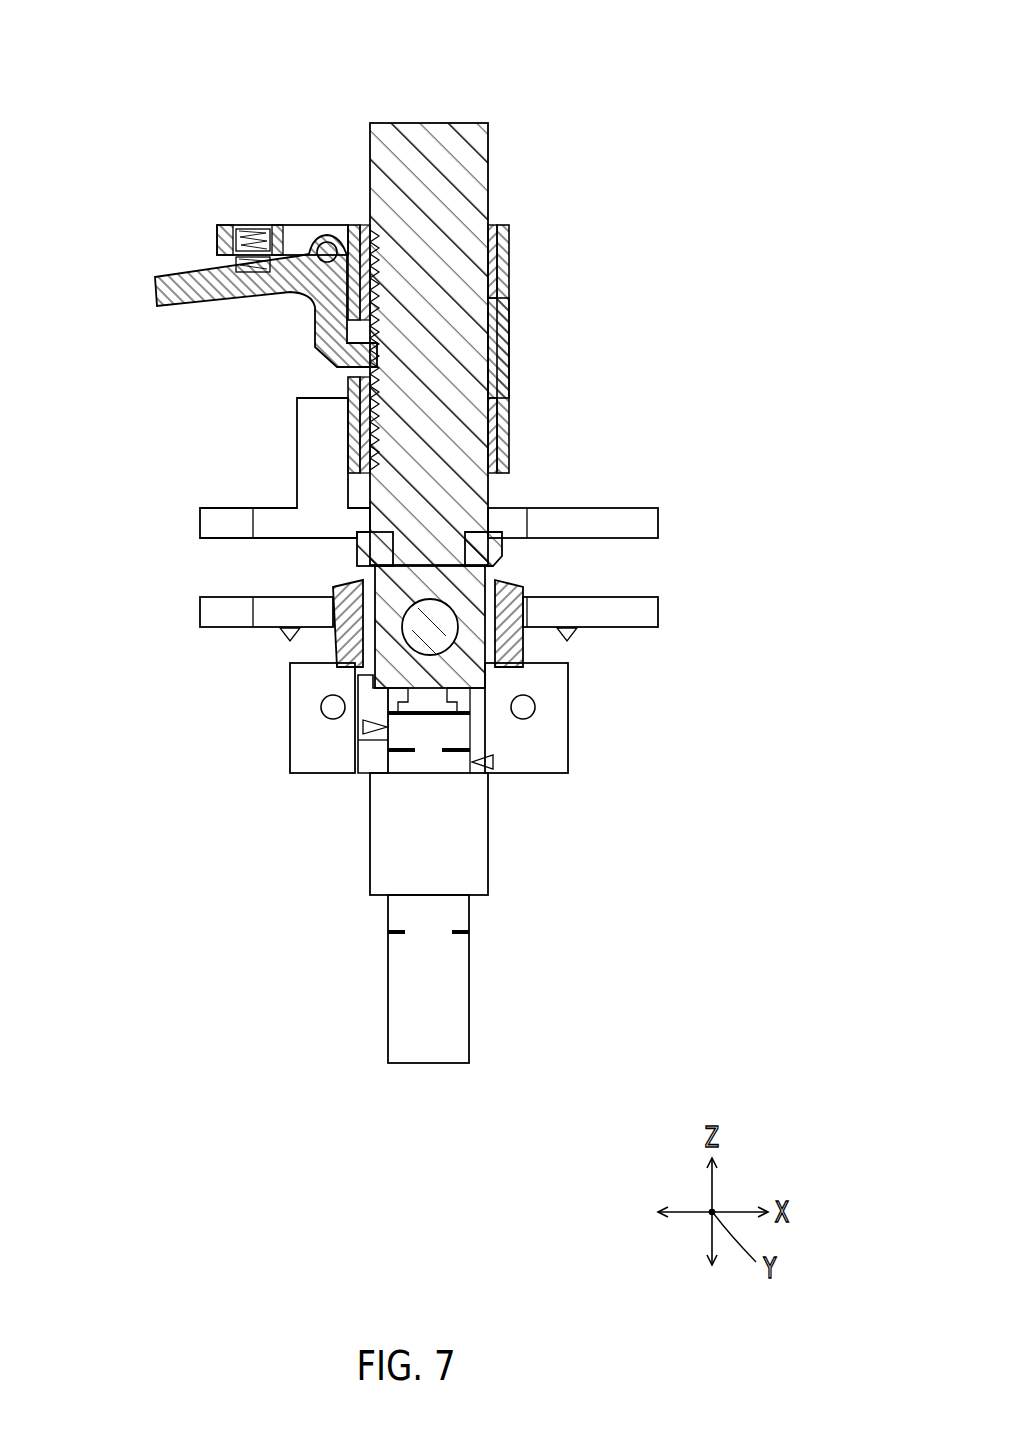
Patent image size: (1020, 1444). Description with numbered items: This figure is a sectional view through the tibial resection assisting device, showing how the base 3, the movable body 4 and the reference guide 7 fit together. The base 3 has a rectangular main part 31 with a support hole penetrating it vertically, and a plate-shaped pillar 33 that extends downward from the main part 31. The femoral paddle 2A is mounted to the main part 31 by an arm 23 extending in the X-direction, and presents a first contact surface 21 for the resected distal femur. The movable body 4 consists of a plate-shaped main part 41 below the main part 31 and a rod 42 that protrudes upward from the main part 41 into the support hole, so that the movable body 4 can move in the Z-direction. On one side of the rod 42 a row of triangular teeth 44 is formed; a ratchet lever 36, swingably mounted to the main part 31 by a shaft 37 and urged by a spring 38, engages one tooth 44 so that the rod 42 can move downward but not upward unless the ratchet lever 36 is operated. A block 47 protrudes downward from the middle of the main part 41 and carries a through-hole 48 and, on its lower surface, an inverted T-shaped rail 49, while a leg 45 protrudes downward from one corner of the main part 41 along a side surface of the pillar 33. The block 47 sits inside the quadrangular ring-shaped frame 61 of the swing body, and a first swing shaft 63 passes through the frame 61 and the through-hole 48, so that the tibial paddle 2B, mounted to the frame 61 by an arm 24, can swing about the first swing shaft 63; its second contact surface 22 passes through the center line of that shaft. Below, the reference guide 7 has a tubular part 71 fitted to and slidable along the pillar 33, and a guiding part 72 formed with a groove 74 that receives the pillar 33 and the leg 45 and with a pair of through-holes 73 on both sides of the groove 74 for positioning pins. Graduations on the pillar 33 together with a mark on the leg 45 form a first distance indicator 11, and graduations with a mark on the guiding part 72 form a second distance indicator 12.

The movable body 4 is at (355, 386).
The rod 42 is at (428, 172).
The teeth 44 is at (352, 224).
The base 3 is at (558, 344).
The main part 31 is at (510, 333).
The spring 38 is at (257, 248).
The shaft 37 is at (328, 242).
The ratchet lever 36 is at (182, 290).
The arm 23 is at (272, 520).
The first contact surface 21 is at (629, 494).
The femoral paddle 2A is at (648, 528).
The main part 41 is at (492, 545).
The block 47 is at (390, 602).
The frame 61 is at (498, 607).
The tibial paddle 2B is at (647, 612).
The arm 24 is at (267, 618).
The second contact surface 22 is at (646, 634).
The through-hole 48 is at (352, 664).
The first swing shaft 63 is at (567, 733).
The leg 45 is at (368, 682).
The through-holes 73 is at (322, 708).
The rail 49 is at (470, 738).
The guiding part 72 is at (320, 755).
The groove 74 is at (363, 757).
The reference guide 7 is at (466, 875).
The first distance indicator 11 is at (388, 790).
The second distance indicator 12 is at (467, 800).
The tubular part 71 is at (385, 863).
The pillar 33 is at (447, 1025).